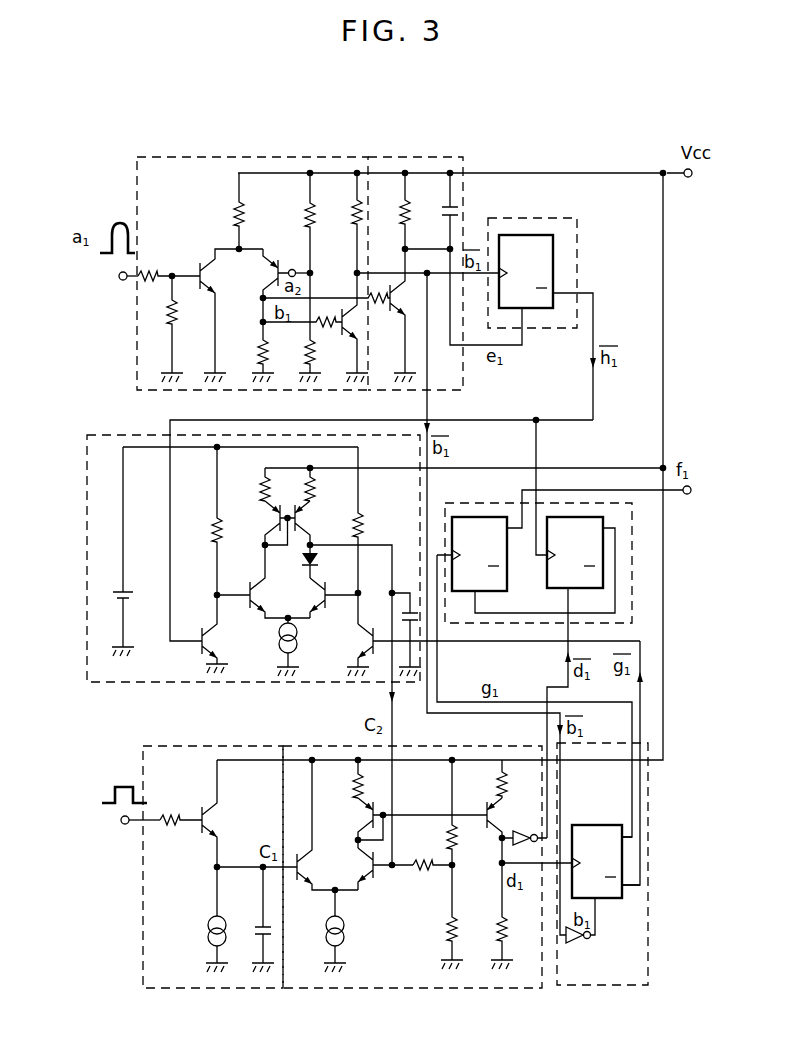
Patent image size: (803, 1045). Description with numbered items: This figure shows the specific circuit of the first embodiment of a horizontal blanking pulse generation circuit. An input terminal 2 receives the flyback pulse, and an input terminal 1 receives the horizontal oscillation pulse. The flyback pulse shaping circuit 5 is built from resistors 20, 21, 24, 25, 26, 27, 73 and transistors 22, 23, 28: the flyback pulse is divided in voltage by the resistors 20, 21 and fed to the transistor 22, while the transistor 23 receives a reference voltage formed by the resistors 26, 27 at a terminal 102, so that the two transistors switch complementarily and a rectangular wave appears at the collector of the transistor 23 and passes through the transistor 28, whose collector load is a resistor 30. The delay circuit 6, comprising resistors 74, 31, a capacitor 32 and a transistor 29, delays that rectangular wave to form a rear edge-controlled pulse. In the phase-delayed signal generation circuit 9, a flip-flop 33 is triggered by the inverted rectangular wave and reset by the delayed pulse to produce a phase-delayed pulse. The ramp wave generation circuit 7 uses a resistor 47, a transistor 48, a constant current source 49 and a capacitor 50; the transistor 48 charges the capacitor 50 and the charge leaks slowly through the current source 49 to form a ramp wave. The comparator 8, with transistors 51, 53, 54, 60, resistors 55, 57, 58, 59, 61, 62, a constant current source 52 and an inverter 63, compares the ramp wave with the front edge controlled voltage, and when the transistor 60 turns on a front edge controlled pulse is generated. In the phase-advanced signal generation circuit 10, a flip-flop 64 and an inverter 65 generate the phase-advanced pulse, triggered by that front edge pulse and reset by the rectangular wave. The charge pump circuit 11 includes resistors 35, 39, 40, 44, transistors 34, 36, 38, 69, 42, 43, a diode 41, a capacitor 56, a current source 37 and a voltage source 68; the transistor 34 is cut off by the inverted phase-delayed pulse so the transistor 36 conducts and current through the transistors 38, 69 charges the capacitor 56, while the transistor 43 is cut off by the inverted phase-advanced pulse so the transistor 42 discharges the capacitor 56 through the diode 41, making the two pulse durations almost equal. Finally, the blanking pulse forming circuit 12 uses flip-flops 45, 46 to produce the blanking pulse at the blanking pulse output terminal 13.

The input terminal 1 is at (125, 826).
The input terminal 2 is at (121, 282).
The flyback pulse shaping circuit 5 is at (203, 157).
The delay circuit 6 is at (421, 157).
The ramp wave generation circuit 7 is at (143, 765).
The comparator 8 is at (430, 746).
The phase-delayed signal generation circuit 9 is at (575, 218).
The phase-advanced signal generation circuit 10 is at (648, 905).
The charge pump circuit 11 is at (87, 680).
The blanking pulse forming circuit 12 is at (632, 578).
The blanking pulse output terminal 13 is at (687, 494).
The resistor 20 is at (150, 272).
The resistor 21 is at (168, 328).
The transistor 22 is at (210, 283).
The transistor 23 is at (272, 258).
The resistor 24 is at (234, 216).
The resistor 25 is at (258, 350).
The resistor 26 is at (313, 227).
The resistor 27 is at (313, 366).
The transistor 28 is at (362, 352).
The transistor 29 is at (402, 305).
The resistor 30 is at (355, 212).
The resistor 31 is at (402, 212).
The capacitor 32 is at (458, 208).
The flip-flop 33 is at (553, 238).
The transistor 34 is at (205, 666).
The resistor 35 is at (213, 540).
The transistor 36 is at (255, 614).
The current source 37 is at (280, 652).
The transistor 38 is at (270, 520).
The resistor 39 is at (262, 488).
The resistor 40 is at (315, 490).
The diode 41 is at (305, 568).
The transistor 42 is at (318, 612).
The transistor 43 is at (362, 655).
The resistor 44 is at (362, 528).
The flip-flop 45 is at (480, 517).
The flip-flop 46 is at (549, 590).
The resistor 47 is at (170, 826).
The transistor 48 is at (222, 820).
The constant current source 49 is at (208, 933).
The capacitor 50 is at (258, 928).
The transistor 51 is at (303, 886).
The constant current source 52 is at (344, 940).
The transistor 53 is at (368, 862).
The transistor 54 is at (368, 818).
The resistor 55 is at (364, 786).
The capacitor 56 is at (404, 612).
The resistor 57 is at (420, 872).
The resistor 58 is at (447, 935).
The resistor 59 is at (448, 838).
The transistor 60 is at (490, 830).
The resistor 61 is at (498, 782).
The resistor 62 is at (507, 930).
The inverter 63 is at (528, 830).
The flip-flop 64 is at (610, 900).
The inverter 65 is at (582, 944).
The voltage source 68 is at (132, 592).
The transistor 69 is at (305, 518).
The resistor 73 is at (326, 328).
The resistor 74 is at (380, 303).
The terminal 102 is at (291, 268).